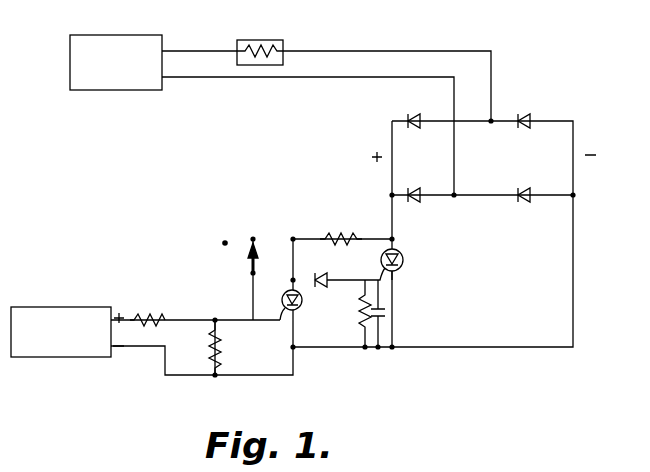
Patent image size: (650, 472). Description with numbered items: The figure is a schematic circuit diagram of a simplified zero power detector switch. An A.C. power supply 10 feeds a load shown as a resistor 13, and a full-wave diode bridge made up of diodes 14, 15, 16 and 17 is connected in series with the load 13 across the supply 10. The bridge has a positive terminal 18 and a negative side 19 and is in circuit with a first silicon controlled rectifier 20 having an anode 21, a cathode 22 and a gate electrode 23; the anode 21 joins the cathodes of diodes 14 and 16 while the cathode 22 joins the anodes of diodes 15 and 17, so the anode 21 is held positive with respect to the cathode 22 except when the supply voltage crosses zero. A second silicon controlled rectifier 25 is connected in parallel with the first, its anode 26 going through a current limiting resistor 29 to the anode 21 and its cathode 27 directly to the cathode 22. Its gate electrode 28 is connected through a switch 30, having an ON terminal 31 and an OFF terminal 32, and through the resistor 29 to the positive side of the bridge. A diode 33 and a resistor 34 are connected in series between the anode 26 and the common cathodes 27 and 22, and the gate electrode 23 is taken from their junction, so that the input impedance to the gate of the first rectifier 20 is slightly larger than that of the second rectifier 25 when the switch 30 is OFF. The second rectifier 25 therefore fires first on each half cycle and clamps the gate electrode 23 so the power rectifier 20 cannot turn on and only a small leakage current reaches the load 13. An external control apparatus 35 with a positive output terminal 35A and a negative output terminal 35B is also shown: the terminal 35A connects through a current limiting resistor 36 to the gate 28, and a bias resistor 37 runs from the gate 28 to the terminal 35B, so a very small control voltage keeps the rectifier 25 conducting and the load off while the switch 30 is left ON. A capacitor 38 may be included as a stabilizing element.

The A.C. power supply 10 is at (70, 58).
The resistor 13 is at (268, 40).
The diode 14 is at (418, 116).
The diode 15 is at (525, 116).
The diode 16 is at (418, 190).
The diode 17 is at (525, 190).
The positive terminal 18 is at (392, 195).
The negative output terminal of bridge 19 is at (573, 135).
The silicon controlled rectifier 20 is at (403, 255).
The anode 21 is at (392, 239).
The cathode 22 is at (402, 274).
The gate electrode 23 is at (378, 277).
The silicon controlled rectifier 25 is at (303, 300).
The anode 26 is at (285, 292).
The cathode 27 is at (297, 320).
The gate electrode 28 is at (284, 318).
The current limiting resistor 29 is at (345, 236).
The switch 30 is at (250, 273).
The ON terminal 31 is at (225, 241).
The OFF terminal 32 is at (253, 239).
The diode 33 is at (321, 267).
The resistor 34 is at (362, 318).
The external control apparatus 35 is at (40, 307).
The positive output terminal 35A is at (124, 318).
The negative output terminal 35B is at (120, 352).
The current limiting resistor 36 is at (148, 315).
The bias resistor 37 is at (210, 350).
The capacitor 38 is at (386, 314).